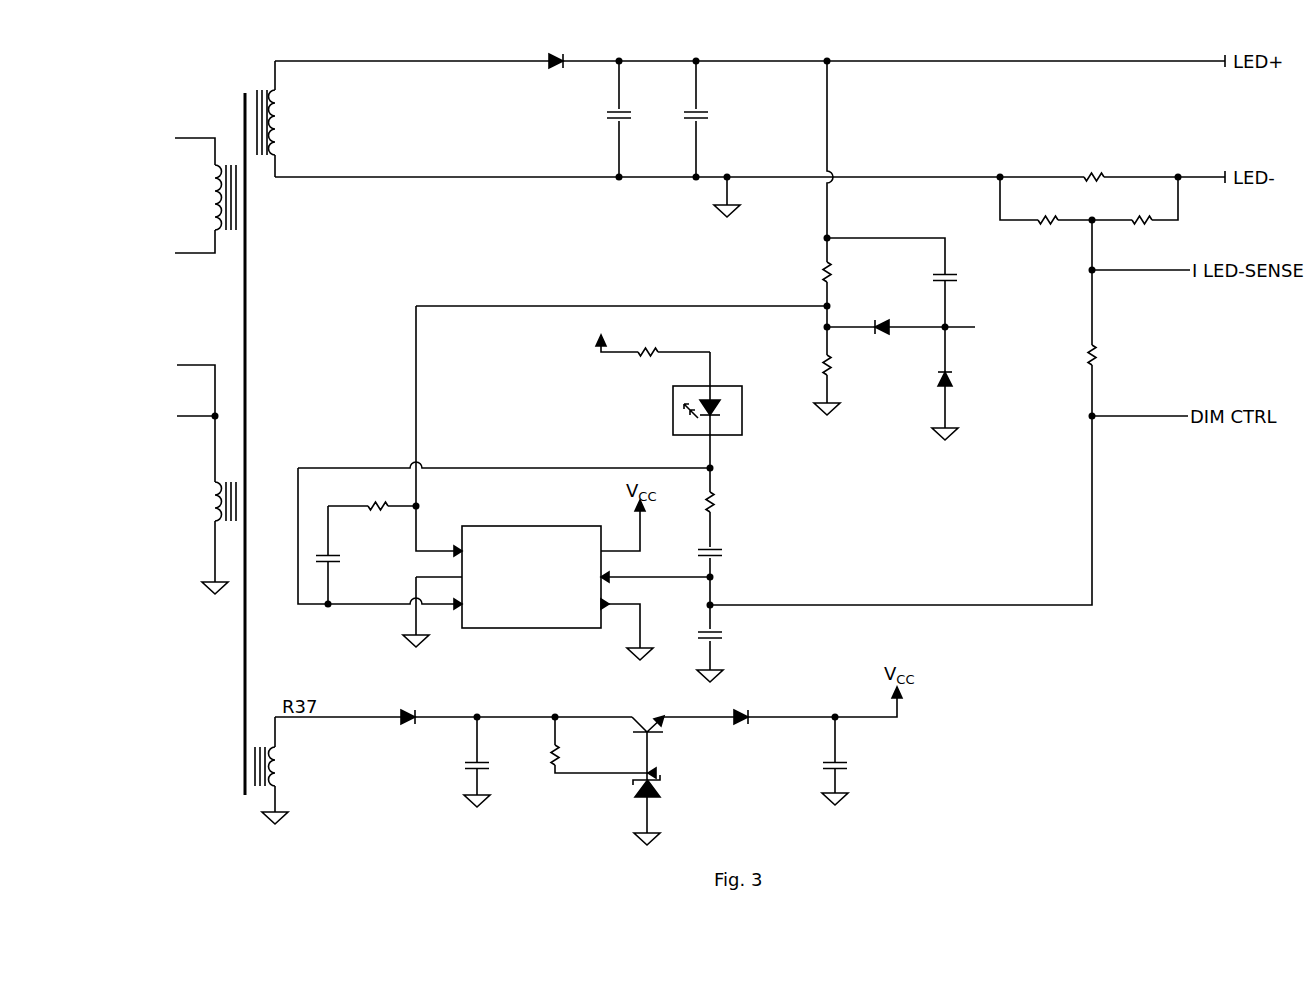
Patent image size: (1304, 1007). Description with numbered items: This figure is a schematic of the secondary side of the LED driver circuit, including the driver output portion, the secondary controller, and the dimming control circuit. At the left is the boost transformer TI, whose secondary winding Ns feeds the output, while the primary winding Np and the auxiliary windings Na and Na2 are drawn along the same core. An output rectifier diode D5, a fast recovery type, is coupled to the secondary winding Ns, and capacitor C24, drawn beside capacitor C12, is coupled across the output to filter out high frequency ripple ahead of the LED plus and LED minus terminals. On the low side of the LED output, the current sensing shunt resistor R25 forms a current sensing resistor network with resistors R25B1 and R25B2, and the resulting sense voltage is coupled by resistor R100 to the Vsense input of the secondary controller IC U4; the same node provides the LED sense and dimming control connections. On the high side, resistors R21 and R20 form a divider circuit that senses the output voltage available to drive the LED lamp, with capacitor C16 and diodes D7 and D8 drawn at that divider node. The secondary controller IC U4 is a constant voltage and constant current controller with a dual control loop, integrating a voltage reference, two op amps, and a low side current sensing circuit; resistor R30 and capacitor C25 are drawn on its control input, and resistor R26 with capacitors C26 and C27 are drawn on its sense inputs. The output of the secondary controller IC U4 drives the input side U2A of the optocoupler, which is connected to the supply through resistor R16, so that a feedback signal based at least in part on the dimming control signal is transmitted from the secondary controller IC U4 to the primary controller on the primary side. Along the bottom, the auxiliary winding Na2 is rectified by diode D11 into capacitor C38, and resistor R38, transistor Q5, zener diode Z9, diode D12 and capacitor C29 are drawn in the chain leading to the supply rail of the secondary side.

The boost transformer TI is at (245, 430).
The secondary winding Ns is at (287, 119).
The primary winding Np is at (203, 195).
The auxiliary winding Na is at (203, 479).
The second auxiliary winding Na2 is at (285, 770).
The output rectifier diode D5 is at (558, 76).
The capacitor C24 is at (636, 119).
The output electrolytic capacitor C12 is at (712, 119).
The current sensing (shunt) resistor R25 is at (1089, 168).
The current sensing resistor R25B1 is at (1046, 200).
The current sensing resistor R25B2 is at (1135, 200).
The resistor R100 is at (1117, 348).
The resistor R21 is at (848, 281).
The resistor R20 is at (844, 370).
The capacitor C16 is at (908, 282).
The diode D7 is at (901, 314).
The diode D8 is at (961, 383).
The optocoupler bias resistor R16 is at (648, 332).
The optocoupler input side U2A is at (714, 410).
The compensation resistor R30 is at (374, 496).
The compensation capacitor C25 is at (346, 557).
The secondary controller IC U4 is at (531, 565).
The resistor R26 is at (731, 501).
The capacitor C26 is at (726, 543).
The capacitor C27 is at (726, 624).
The rectifier diode D11 is at (412, 702).
The capacitor C38 is at (492, 761).
The bias resistor R38 is at (603, 746).
The regulator transistor Q5 is at (648, 737).
The zener diode Z9 is at (663, 810).
The diode D12 is at (749, 702).
The Vcc capacitor C29 is at (850, 760).